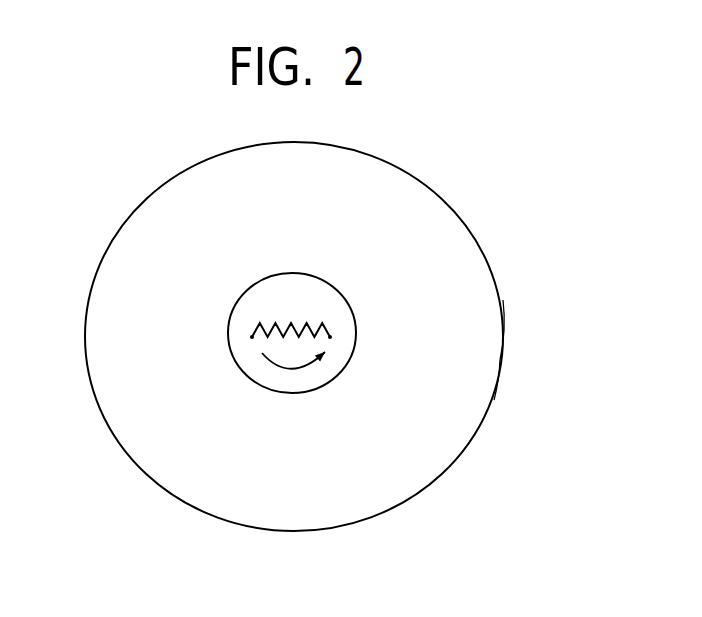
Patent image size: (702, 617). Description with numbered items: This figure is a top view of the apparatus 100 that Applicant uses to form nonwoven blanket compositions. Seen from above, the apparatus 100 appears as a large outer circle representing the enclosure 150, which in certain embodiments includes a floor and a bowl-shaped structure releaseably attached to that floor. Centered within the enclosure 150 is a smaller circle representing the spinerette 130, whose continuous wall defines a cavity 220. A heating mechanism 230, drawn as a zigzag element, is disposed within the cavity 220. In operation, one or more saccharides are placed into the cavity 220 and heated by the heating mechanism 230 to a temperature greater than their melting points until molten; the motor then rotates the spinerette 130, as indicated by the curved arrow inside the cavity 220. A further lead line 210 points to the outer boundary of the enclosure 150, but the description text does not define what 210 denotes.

The apparatus 100 is at (443, 488).
The disc edge 210 is at (482, 323).
The enclosure 150 is at (500, 380).
The spinerette 130 is at (340, 289).
The heating mechanism 230 is at (278, 323).
The cavity 220 is at (342, 352).